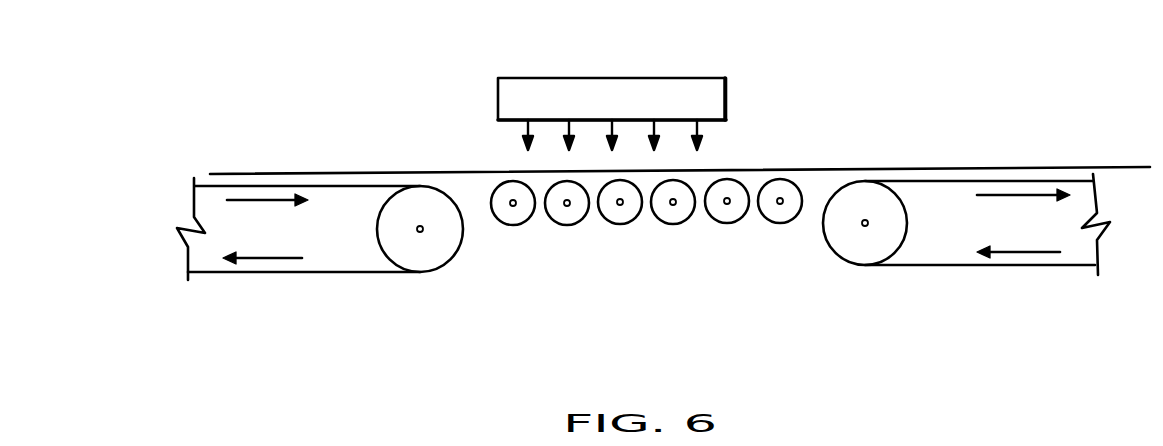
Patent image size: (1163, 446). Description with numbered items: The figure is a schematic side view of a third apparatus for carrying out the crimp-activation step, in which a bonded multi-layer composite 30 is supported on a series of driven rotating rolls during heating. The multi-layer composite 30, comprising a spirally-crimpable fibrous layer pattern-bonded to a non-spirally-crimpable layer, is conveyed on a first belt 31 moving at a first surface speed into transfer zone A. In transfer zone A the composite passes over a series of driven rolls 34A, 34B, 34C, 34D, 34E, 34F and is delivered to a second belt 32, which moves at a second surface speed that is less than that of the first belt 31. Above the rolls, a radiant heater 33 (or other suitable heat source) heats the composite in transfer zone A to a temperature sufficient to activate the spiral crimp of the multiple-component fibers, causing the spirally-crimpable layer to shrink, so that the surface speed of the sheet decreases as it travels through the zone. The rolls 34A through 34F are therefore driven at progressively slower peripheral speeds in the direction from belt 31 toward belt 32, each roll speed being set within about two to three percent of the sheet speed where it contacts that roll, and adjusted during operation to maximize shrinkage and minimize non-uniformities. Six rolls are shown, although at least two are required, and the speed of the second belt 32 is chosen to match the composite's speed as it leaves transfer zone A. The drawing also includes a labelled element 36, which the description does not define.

The multi-layer composite 30 is at (314, 156).
The first belt 31 is at (287, 273).
The transfer zone A is at (494, 157).
The radiant heater 33 is at (603, 78).
The driven roll 34A is at (517, 225).
The driven roll 34B is at (568, 225).
The driven roll 34C is at (620, 224).
The driven roll 34D is at (673, 224).
The driven roll 34E is at (727, 223).
The driven roll 34F is at (778, 223).
The outlet conveyor belt 36 is at (972, 144).
The second belt 32 is at (963, 267).